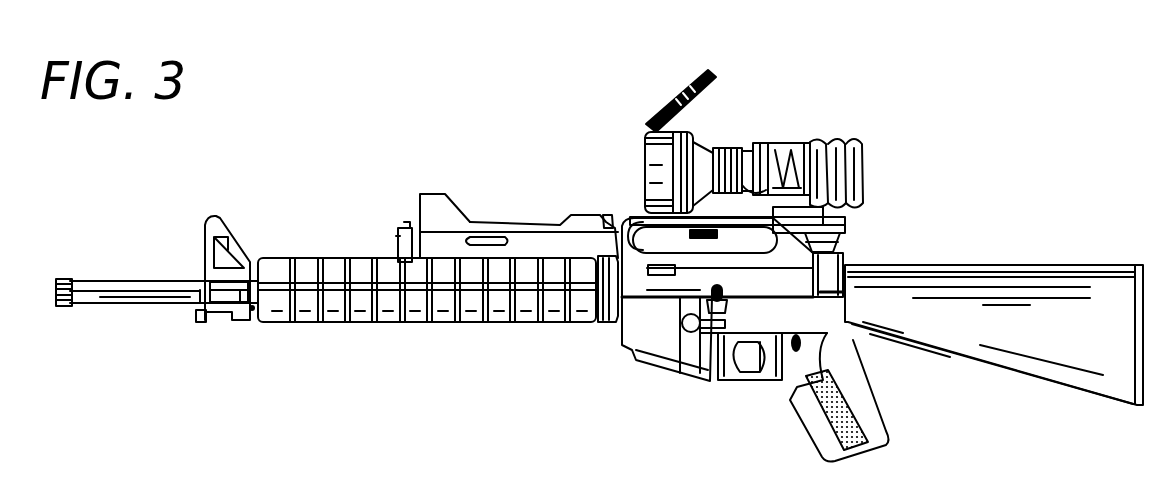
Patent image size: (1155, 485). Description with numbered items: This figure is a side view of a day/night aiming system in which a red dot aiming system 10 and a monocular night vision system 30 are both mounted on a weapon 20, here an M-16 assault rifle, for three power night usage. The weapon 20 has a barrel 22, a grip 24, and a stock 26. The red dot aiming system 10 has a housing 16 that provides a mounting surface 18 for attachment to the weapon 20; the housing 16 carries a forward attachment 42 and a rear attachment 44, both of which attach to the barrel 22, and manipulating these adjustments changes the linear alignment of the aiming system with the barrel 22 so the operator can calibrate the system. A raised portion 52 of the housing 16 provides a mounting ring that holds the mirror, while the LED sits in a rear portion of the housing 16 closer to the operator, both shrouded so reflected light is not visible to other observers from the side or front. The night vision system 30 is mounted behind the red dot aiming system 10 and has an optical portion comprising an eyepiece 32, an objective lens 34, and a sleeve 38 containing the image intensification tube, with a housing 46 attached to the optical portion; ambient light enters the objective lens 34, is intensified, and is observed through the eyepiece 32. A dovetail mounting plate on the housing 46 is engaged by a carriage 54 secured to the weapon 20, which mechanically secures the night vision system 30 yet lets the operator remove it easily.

The red dot aiming system 10 is at (386, 151).
The housing 16 is at (470, 225).
The mounting surface 18 is at (446, 242).
The weapon 20 is at (597, 336).
The barrel 22 is at (285, 258).
The grip 24 is at (825, 418).
The stock 26 is at (1030, 340).
The night vision system 30 is at (826, 117).
The eyepiece 32 is at (864, 166).
The objective lens 34 is at (645, 132).
The sleeve 38 is at (766, 146).
The forward attachment 42 is at (400, 238).
The rear attachment 44 is at (606, 222).
The housing 46 is at (846, 215).
The raised portion 52 is at (436, 192).
The carriage 54 is at (846, 232).